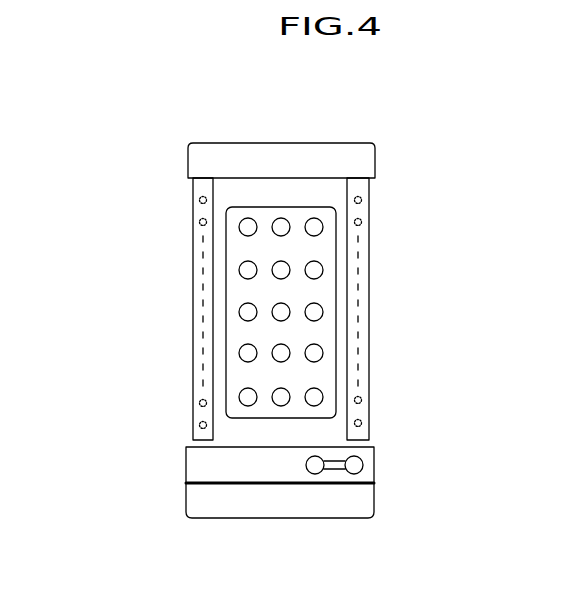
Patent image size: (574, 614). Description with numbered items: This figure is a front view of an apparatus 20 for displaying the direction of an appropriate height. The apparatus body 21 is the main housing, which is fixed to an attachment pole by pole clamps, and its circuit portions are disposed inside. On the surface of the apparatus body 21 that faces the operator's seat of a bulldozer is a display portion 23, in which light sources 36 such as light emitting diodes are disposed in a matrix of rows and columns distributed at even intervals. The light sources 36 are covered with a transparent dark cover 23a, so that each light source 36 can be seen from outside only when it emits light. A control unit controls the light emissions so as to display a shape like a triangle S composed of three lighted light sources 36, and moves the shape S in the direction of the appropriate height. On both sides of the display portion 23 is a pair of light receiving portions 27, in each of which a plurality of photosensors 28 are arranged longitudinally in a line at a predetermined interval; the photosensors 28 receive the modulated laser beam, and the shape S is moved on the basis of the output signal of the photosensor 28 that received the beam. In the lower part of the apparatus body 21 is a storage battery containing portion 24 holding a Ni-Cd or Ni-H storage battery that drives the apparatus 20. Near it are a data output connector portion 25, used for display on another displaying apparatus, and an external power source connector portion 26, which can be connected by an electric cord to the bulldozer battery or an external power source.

The apparatus 20 is at (176, 357).
The apparatus body 21 is at (301, 190).
The display portion 23 is at (236, 379).
The transparent dark cover 23a is at (243, 247).
The storage battery containing portion 24 is at (280, 508).
The data output connector portion 25 is at (315, 474).
The external power source connector portion 26 is at (364, 468).
The light receiving portions 27 is at (193, 268).
The photosensors 28 is at (198, 220).
The light sources 36 is at (245, 219).
The triangle shape S is at (262, 215).